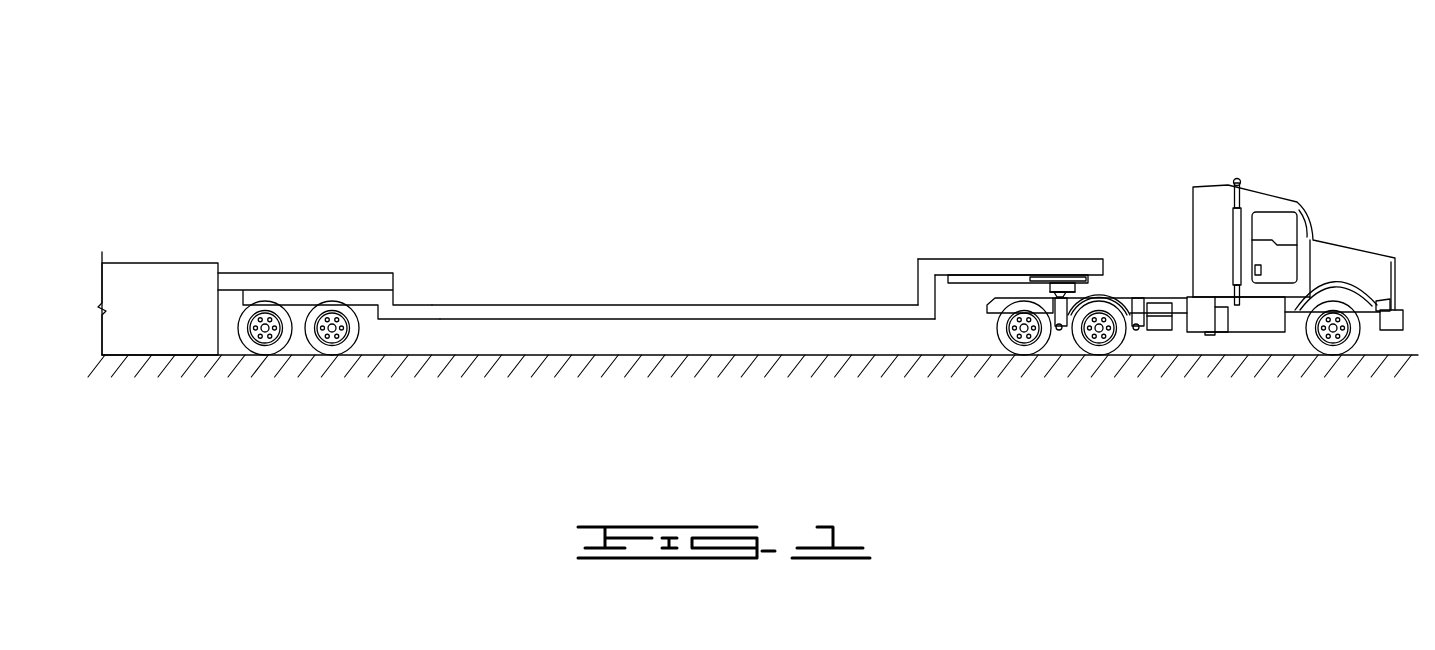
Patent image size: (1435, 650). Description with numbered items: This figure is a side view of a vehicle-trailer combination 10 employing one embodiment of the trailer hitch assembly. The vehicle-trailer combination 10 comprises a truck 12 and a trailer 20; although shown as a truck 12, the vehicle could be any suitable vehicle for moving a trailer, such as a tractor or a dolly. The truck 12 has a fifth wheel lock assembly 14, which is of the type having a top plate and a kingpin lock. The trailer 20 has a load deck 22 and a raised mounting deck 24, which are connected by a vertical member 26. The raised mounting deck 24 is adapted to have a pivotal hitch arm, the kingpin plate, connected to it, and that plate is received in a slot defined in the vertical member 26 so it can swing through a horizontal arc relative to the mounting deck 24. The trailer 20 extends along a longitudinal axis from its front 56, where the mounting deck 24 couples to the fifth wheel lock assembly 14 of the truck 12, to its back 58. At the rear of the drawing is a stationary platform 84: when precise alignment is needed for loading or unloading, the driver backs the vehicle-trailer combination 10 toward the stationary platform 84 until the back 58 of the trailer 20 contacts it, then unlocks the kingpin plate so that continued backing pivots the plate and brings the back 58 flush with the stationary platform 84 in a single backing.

The vehicle-trailer combination 10 is at (891, 98).
The truck 12 is at (1270, 196).
The fifth wheel lock assembly 14 is at (1058, 297).
The trailer 20 is at (322, 273).
The load deck 22 is at (432, 305).
The raised mounting deck 24 is at (940, 259).
The vertical member 26 is at (918, 285).
The front 56 is at (1060, 259).
The back 58 is at (232, 273).
The stationary platform 84 is at (131, 263).